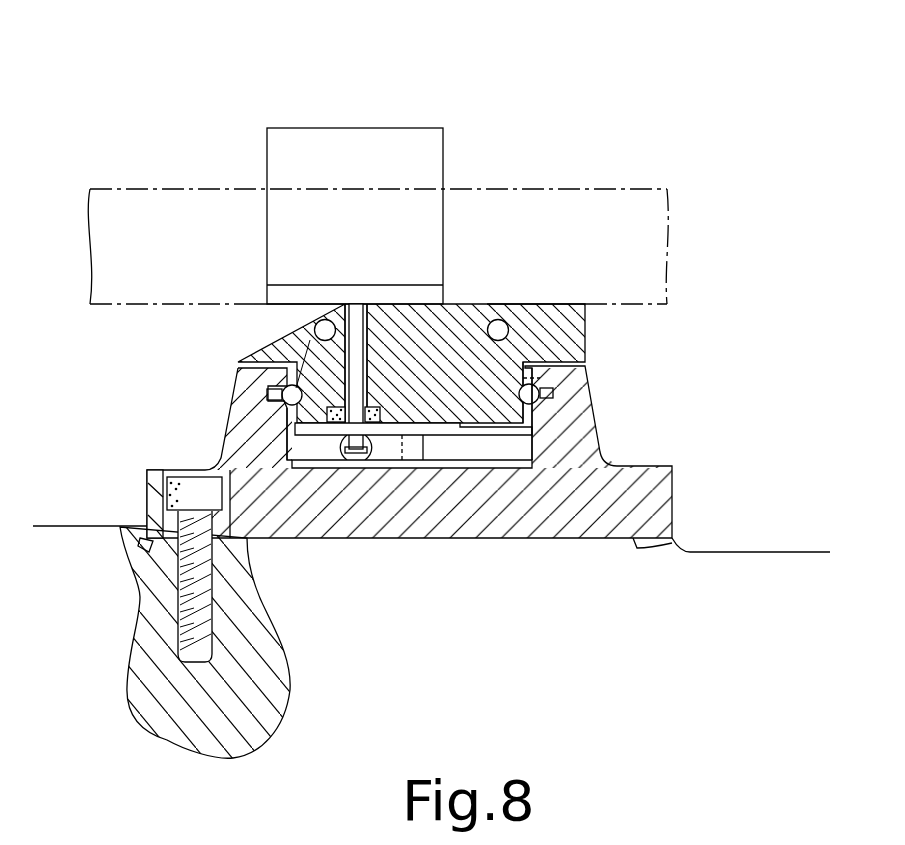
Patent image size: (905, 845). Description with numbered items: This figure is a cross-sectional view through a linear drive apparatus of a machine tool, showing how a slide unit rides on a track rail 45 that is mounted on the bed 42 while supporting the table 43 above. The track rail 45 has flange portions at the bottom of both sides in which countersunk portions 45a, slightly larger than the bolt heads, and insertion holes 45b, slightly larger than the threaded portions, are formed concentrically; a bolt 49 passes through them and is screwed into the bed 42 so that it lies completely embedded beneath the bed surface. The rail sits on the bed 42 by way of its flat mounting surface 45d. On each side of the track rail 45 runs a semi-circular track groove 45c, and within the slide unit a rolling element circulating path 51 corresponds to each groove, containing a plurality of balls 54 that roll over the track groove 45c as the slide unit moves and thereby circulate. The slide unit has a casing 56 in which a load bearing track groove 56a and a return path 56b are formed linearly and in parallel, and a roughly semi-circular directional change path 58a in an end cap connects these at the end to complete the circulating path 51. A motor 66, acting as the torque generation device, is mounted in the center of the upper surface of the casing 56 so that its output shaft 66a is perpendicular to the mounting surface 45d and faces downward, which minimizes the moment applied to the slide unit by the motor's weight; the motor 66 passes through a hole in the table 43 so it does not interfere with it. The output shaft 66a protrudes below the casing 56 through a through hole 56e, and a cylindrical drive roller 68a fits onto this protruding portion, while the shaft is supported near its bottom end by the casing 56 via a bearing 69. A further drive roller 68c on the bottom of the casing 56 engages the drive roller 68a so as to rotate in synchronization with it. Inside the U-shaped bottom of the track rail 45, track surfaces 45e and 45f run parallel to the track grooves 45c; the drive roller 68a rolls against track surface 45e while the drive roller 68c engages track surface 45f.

The bed 42 is at (775, 590).
The table 43 is at (623, 203).
The track rail 45 is at (660, 461).
The countersunk portion 45a is at (160, 498).
The insertion hole 45b is at (155, 540).
The track groove 45c is at (278, 396).
The mounting surface 45d is at (677, 540).
The track surface 45e is at (295, 462).
The track surface 45f is at (533, 420).
The bolt 49 is at (193, 493).
The rolling element circulating path 51 is at (308, 346).
The ball 54 is at (327, 318).
The casing 56 is at (248, 304).
The load bearing track groove 56a is at (523, 400).
The return path 56b is at (487, 304).
The through hole 56e is at (367, 302).
The directional change path 58a is at (527, 376).
The motor 66 is at (413, 125).
The output shaft 66a is at (356, 453).
The drive roller 68a is at (385, 453).
The drive roller 68c is at (457, 450).
The bearing 69 is at (336, 453).